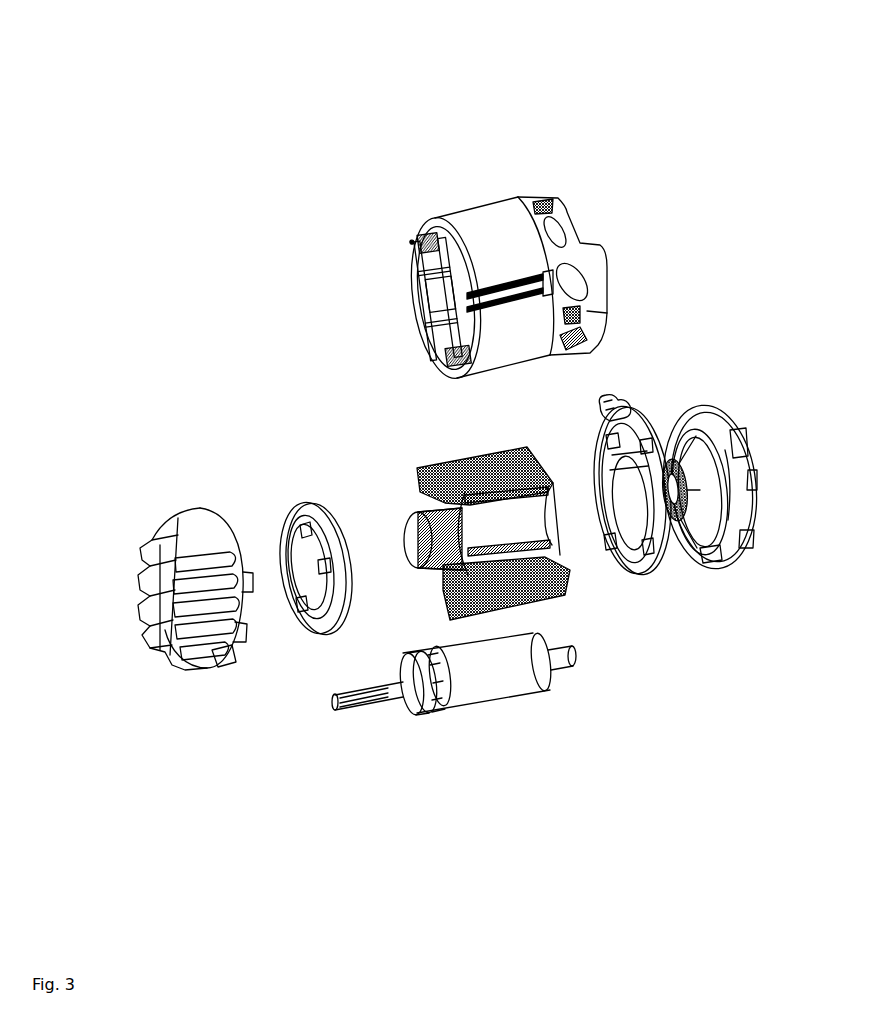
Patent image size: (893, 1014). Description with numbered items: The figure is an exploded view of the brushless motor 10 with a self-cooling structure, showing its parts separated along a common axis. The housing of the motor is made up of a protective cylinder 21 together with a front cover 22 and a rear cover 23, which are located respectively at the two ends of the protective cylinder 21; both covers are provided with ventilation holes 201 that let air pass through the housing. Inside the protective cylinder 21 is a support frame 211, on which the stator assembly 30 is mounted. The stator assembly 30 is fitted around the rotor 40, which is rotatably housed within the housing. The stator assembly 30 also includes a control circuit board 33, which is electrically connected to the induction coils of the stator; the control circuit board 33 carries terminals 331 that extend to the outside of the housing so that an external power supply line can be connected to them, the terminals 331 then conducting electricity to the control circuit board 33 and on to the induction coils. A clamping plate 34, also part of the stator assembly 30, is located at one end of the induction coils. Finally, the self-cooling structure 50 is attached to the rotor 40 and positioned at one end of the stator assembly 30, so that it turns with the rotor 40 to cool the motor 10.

The brushless motor 10 is at (441, 40).
The protective cylinder 21 is at (471, 221).
The support frame 211 is at (415, 292).
The front cover 22 is at (180, 512).
The rear cover 23 is at (712, 418).
The ventilation holes 201 is at (235, 665).
The stator assembly 30 is at (452, 458).
The control circuit board 33 is at (650, 566).
The terminals 331 is at (622, 412).
The clamping plate 34 is at (292, 505).
The rotor 40 is at (498, 693).
The self-cooling structure 50 is at (412, 712).